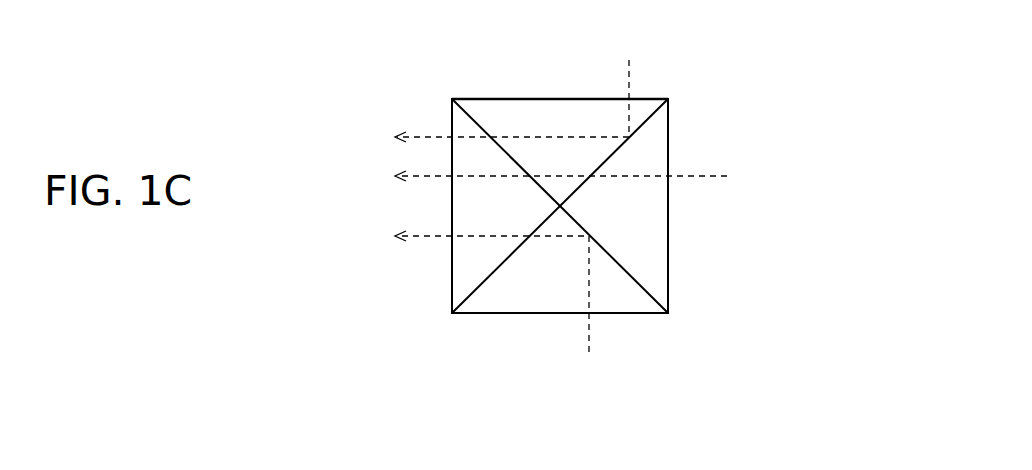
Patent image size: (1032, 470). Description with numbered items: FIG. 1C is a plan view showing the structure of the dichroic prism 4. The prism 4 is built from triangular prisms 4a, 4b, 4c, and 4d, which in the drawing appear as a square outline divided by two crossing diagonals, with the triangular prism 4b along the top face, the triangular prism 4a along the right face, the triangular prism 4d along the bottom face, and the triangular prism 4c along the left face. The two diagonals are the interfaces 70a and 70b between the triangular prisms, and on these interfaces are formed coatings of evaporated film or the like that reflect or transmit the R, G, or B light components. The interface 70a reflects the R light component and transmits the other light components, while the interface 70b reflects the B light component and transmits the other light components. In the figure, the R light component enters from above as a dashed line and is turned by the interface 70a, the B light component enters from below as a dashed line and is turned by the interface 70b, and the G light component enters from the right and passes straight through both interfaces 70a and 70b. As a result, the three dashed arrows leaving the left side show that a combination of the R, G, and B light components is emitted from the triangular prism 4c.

The prism 4 is at (678, 90).
The triangular prism 4a is at (671, 163).
The triangular prism 4b is at (502, 99).
The triangular prism 4c is at (451, 275).
The triangular prism 4d is at (510, 314).
The interface 70a is at (652, 118).
The interface 70b is at (642, 284).
The R light component R is at (516, 90).
The G light component G is at (576, 180).
The B light component B is at (496, 309).